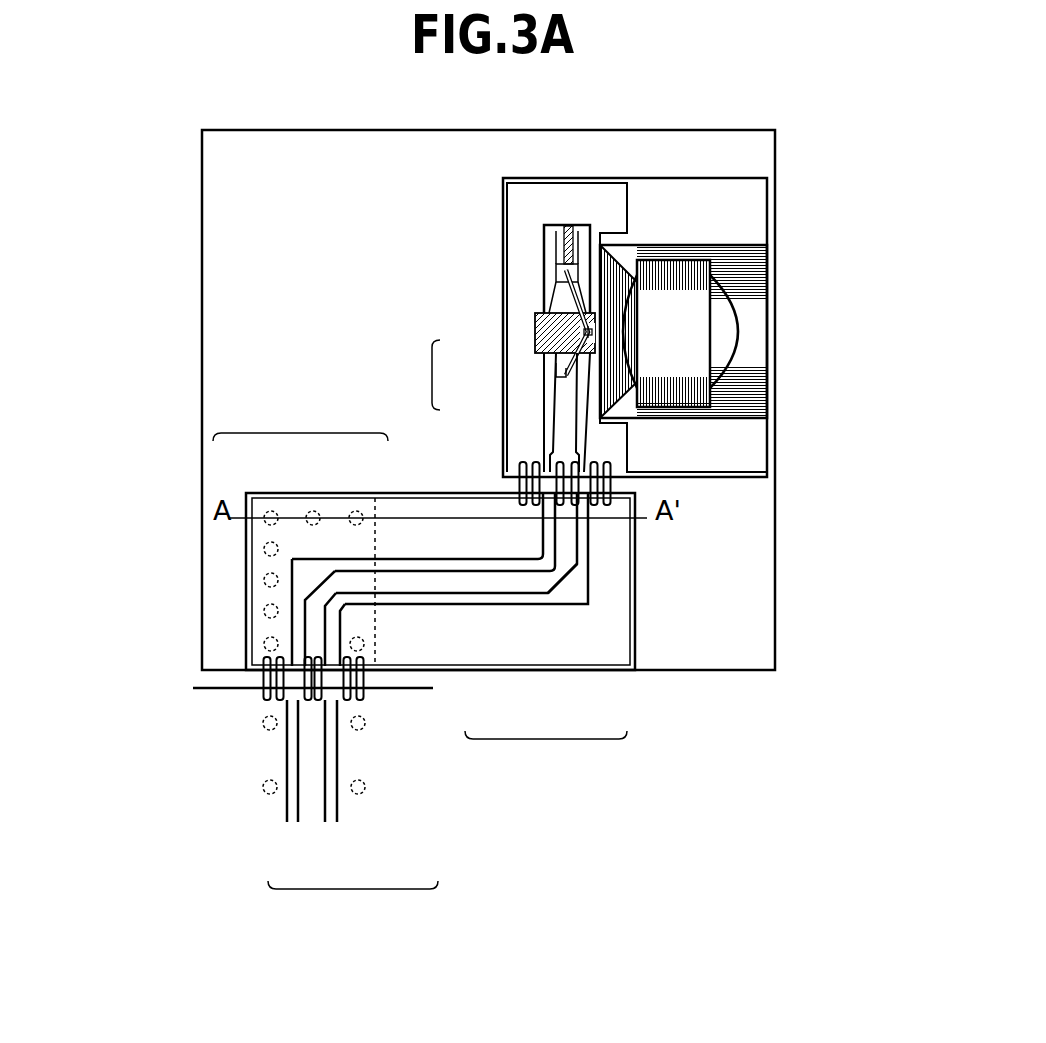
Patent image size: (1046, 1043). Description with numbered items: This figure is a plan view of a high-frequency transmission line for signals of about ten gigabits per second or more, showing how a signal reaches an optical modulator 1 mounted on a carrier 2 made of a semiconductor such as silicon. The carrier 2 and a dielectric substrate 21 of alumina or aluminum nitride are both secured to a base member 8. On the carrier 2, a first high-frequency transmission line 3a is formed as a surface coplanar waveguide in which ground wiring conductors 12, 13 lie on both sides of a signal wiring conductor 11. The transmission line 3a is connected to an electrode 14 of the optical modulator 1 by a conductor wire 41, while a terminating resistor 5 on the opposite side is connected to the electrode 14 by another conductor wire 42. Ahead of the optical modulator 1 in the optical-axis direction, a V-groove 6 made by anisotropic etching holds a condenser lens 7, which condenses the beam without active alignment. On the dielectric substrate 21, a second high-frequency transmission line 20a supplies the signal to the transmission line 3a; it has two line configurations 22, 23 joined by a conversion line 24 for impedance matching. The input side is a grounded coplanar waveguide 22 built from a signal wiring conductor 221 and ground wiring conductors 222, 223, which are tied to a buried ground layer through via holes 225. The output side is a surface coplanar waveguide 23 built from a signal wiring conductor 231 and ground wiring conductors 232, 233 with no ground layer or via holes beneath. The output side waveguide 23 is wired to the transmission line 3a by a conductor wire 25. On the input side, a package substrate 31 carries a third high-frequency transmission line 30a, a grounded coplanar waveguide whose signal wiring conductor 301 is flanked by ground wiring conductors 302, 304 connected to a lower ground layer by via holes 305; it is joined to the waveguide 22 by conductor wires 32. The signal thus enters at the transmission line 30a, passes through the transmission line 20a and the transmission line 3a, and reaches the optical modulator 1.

The optical modulator 1 is at (540, 318).
The carrier 2 is at (667, 195).
The first high-frequency transmission line 3a is at (416, 375).
The terminating resistor 5 is at (548, 235).
The V-groove 6 is at (748, 333).
The condenser lens 7 is at (693, 290).
The base member 8 is at (252, 317).
The signal wiring conductor 11 is at (560, 384).
The ground wiring conductor 12 is at (530, 432).
The ground wiring conductor 13 is at (542, 362).
The electrode 14 is at (556, 270).
The conductor wire 41 is at (582, 330).
The conductor wire 42 is at (562, 241).
The second high-frequency transmission line 20a is at (565, 578).
The dielectric substrate 21 is at (637, 630).
The grounded coplanar waveguide 22 is at (300, 421).
The surface coplanar waveguide 23 is at (546, 749).
The conversion line 24 is at (380, 582).
The conductor wire 25 is at (546, 492).
The signal wiring conductor 221 is at (350, 583).
The ground wiring conductor 222 is at (348, 612).
The ground wiring conductor 223 is at (333, 575).
The via holes 225 is at (266, 608).
The signal wiring conductor 231 is at (481, 578).
The ground wiring conductor 232 is at (510, 542).
The ground wiring conductor 233 is at (446, 637).
The package substrate 31 is at (207, 686).
The conductor wire 32 is at (268, 652).
The third high-frequency transmission line 30a is at (353, 902).
The signal wiring conductor 301 is at (307, 802).
The ground wiring conductor 302 is at (270, 802).
The lead wire 304 is at (345, 802).
The via holes 305 is at (366, 727).